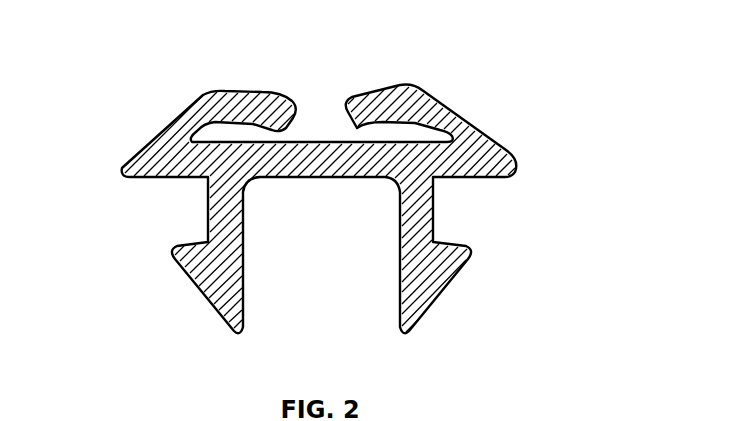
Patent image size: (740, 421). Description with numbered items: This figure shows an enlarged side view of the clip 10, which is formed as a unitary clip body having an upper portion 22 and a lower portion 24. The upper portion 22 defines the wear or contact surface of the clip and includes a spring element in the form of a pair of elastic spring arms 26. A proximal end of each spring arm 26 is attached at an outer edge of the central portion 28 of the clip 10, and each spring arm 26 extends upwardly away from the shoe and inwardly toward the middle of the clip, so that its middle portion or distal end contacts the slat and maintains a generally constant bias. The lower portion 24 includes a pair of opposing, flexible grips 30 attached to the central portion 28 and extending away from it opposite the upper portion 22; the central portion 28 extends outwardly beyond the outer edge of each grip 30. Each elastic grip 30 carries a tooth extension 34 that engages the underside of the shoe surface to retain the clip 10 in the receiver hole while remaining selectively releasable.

The clip 10 is at (327, 199).
The upper portion 22 is at (350, 135).
The lower portion 24 is at (357, 276).
The spring arm 26 is at (252, 93).
The central portion 28 is at (330, 180).
The grip 30 is at (222, 296).
The tooth extension 34 is at (190, 240).